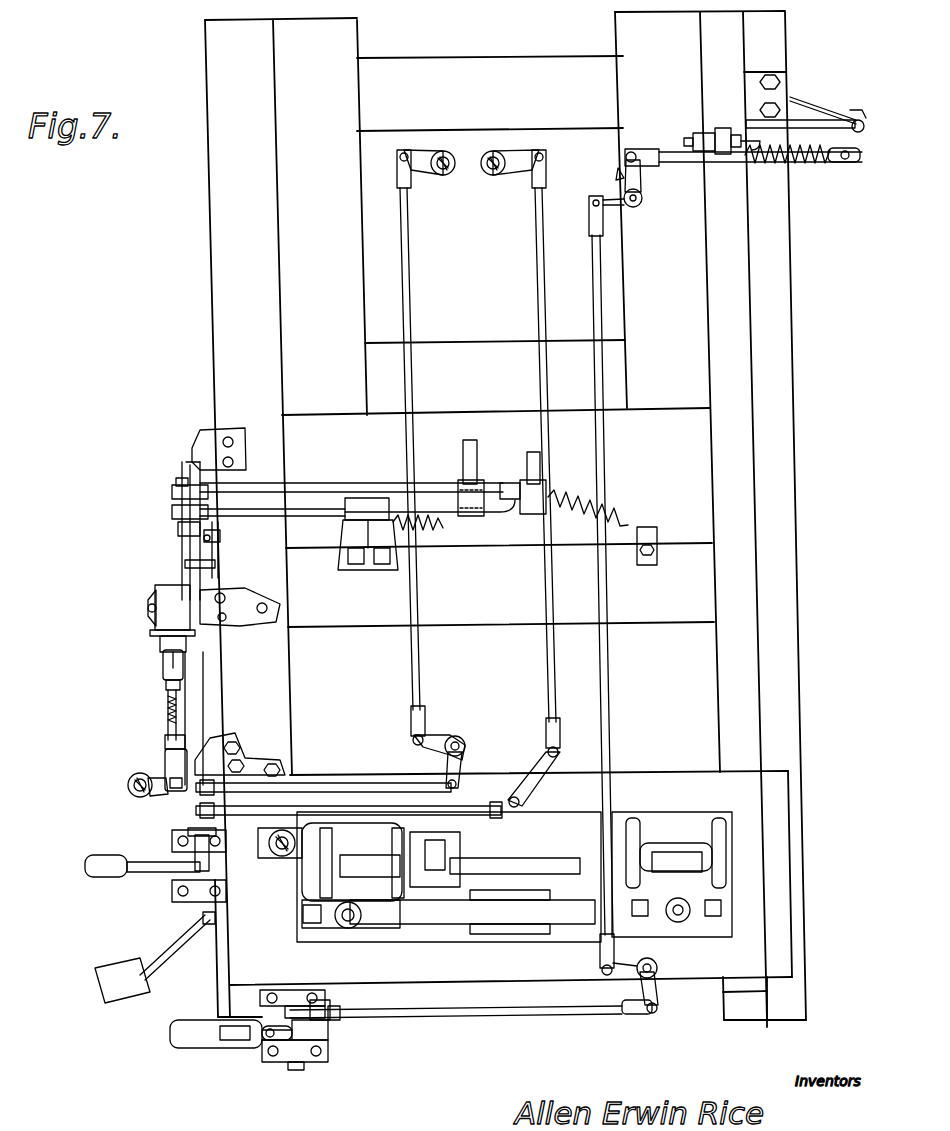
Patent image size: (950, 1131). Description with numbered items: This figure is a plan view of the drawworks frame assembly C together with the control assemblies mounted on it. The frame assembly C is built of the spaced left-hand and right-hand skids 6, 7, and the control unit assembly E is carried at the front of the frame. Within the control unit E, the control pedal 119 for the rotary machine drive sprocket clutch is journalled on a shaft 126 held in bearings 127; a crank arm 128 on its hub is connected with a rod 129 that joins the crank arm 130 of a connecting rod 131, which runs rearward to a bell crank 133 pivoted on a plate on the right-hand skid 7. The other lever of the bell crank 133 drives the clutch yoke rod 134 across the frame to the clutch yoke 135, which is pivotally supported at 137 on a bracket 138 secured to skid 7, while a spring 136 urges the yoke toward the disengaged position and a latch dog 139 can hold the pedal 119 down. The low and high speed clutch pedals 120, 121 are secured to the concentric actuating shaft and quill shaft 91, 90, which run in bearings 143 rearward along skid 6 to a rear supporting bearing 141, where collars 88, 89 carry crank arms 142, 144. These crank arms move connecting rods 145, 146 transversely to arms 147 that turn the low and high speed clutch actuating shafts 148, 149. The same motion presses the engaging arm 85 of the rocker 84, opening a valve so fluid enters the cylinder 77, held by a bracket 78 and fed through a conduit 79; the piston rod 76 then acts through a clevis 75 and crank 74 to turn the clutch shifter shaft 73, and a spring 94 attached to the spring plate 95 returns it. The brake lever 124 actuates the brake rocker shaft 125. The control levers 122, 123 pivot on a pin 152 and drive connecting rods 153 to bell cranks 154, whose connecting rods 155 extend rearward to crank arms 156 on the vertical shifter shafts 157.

The left-hand skid 6 is at (183, 261).
The right-hand skid 7 is at (792, 300).
The frame assembly C is at (207, 223).
The control unit assembly E is at (440, 932).
The clutch shifter shaft 73 is at (140, 782).
The crank 74 is at (138, 797).
The clevis 75 is at (165, 762).
The rod 76 is at (172, 722).
The cylinder 77 is at (155, 598).
The bracket 78 is at (250, 604).
The conduit 79 is at (185, 566).
The rocker 84 is at (219, 560).
The engaging arm 85 is at (182, 540).
The collar 88 is at (178, 530).
The collar 89 is at (172, 492).
The quill shaft 90 is at (200, 712).
The actuating shaft 91 is at (205, 926).
The spring 94 is at (166, 703).
The spring plate 95 is at (165, 745).
The control pedal 119 is at (192, 1044).
The control pedal 120 is at (125, 994).
The control pedal 121 is at (95, 868).
The control lever 122 is at (200, 811).
The control lever 123 is at (200, 790).
The brake lever 124 is at (285, 858).
The brake rocker shaft 125 is at (490, 862).
The shaft 126 is at (296, 1072).
The bearings 127 is at (265, 990).
The crank arm 128 is at (300, 1008).
The rod 129 is at (535, 1016).
The crank arm 130 is at (655, 995).
The connecting rod 131 is at (603, 456).
The bell crank 133 is at (612, 210).
The clutch yoke rod 134 is at (722, 165).
The clutch yoke 135 is at (848, 165).
The spring 136 is at (775, 165).
The pivot 137 is at (842, 113).
The bracket 138 is at (805, 108).
The latch dog 139 is at (238, 1045).
The rear supporting bearing 141 is at (192, 448).
The crank arm 142 is at (172, 512).
The bearings 143 is at (172, 840).
The crank arm 144 is at (175, 480).
The connecting rod 145 is at (260, 518).
The connecting rod 146 is at (293, 482).
The arms 147 is at (465, 508).
The low speed clutch actuating shaft 148 is at (528, 462).
The high speed clutch actuating shaft 149 is at (462, 456).
The pivot pin 152 is at (205, 850).
The connecting rods 153 is at (325, 806).
The bell cranks 154 is at (530, 745).
The connecting rods 155 is at (535, 305).
The crank arms 156 is at (512, 175).
The shifter shafts 157 is at (445, 150).